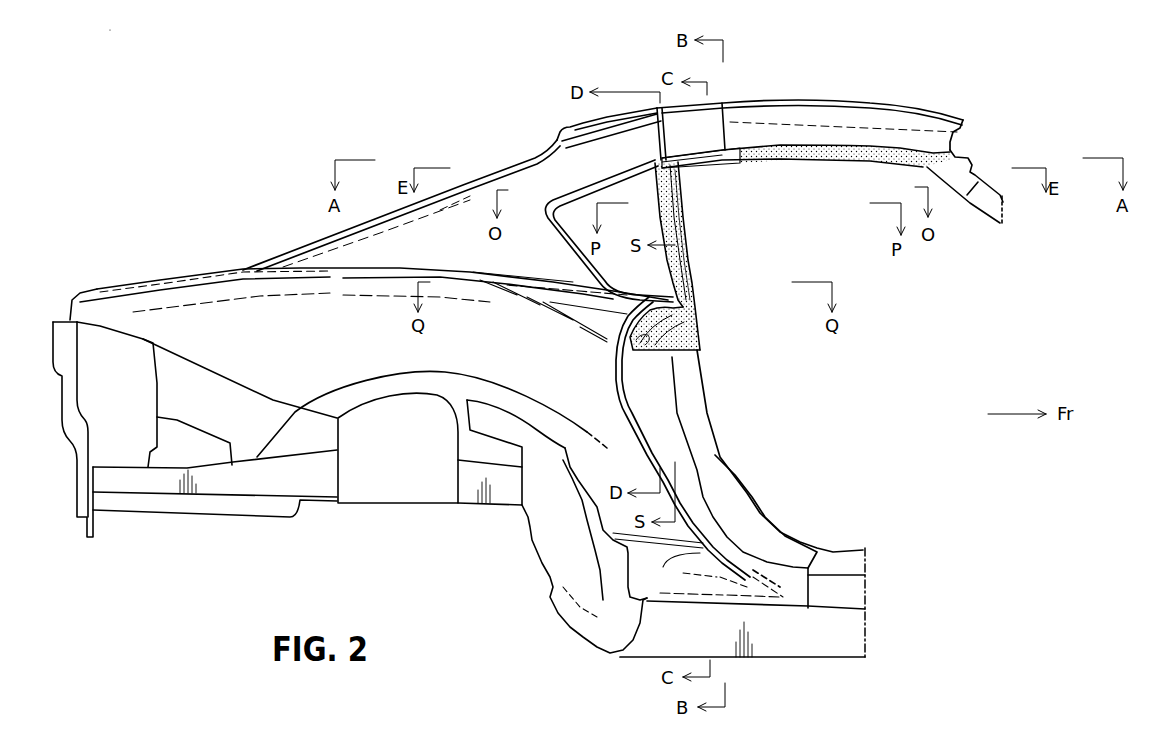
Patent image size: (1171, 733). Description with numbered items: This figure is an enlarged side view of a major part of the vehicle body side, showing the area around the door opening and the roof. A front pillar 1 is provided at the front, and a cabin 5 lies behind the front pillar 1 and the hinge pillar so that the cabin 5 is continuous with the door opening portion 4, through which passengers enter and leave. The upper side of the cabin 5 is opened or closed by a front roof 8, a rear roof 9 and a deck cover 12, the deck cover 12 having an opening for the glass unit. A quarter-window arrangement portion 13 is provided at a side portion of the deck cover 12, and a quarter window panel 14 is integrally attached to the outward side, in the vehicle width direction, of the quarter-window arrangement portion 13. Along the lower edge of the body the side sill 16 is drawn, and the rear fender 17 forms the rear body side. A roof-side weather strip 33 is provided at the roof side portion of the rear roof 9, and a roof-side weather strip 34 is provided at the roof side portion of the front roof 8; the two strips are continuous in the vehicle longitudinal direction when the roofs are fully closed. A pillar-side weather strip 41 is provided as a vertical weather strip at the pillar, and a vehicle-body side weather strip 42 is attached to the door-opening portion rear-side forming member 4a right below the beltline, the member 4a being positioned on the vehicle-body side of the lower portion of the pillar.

The front pillar 1 is at (977, 222).
The door opening portion 4 is at (713, 407).
The door-opening portion rear-side forming member 4a is at (665, 376).
The cabin 5 is at (908, 394).
The front roof 8 is at (855, 104).
The rear roof 9 is at (712, 103).
The deck cover 12 is at (567, 119).
The quarter-window arrangement portion 13 is at (602, 176).
The quarter window panel 14 is at (580, 240).
The side sill 16 is at (835, 660).
The rear fender 17 is at (313, 343).
The roof-side weather strip 33 is at (697, 170).
The roof-side weather strip 34 is at (800, 157).
The pillar-side weather strip 41 is at (708, 251).
The vehicle-body side weather strip 42 is at (690, 313).